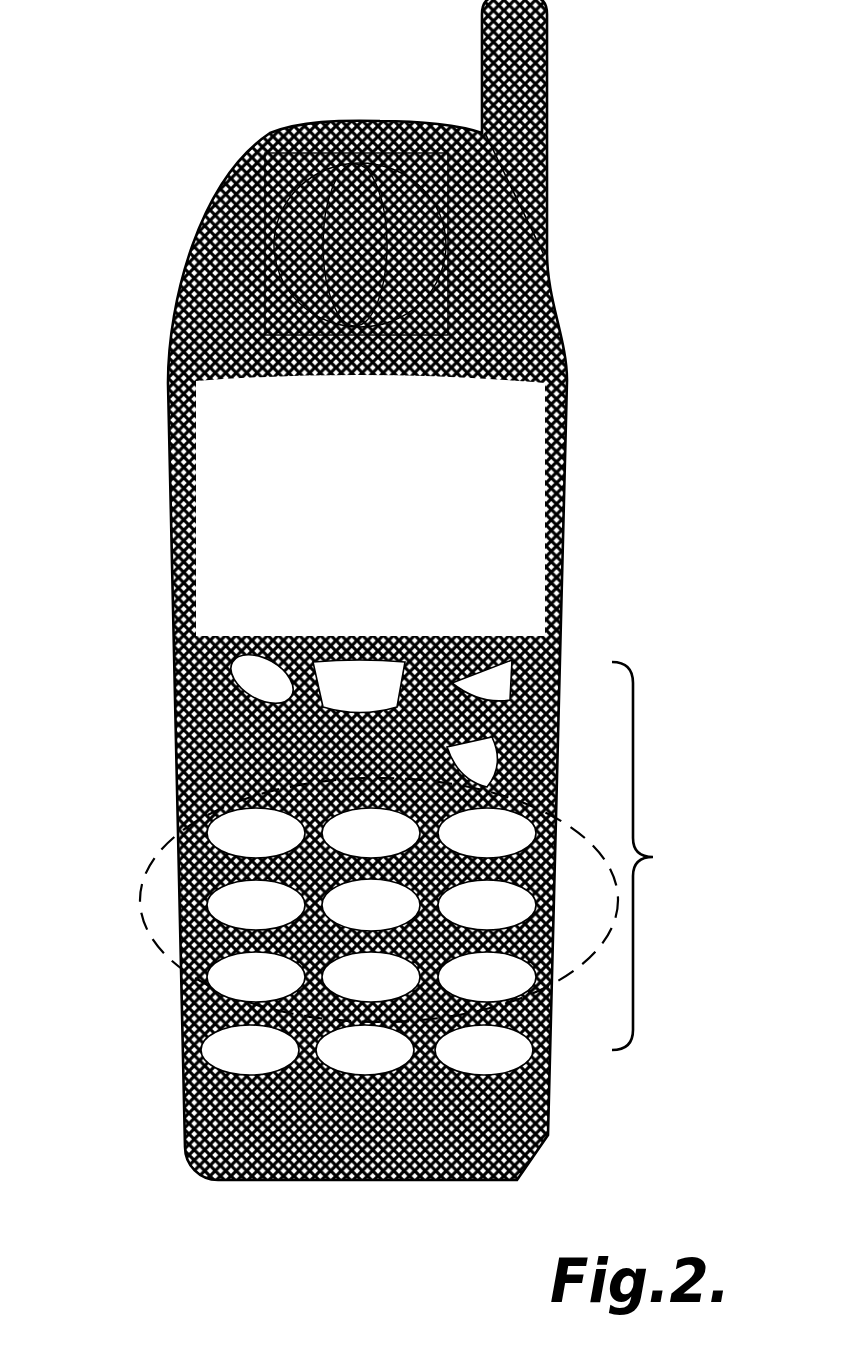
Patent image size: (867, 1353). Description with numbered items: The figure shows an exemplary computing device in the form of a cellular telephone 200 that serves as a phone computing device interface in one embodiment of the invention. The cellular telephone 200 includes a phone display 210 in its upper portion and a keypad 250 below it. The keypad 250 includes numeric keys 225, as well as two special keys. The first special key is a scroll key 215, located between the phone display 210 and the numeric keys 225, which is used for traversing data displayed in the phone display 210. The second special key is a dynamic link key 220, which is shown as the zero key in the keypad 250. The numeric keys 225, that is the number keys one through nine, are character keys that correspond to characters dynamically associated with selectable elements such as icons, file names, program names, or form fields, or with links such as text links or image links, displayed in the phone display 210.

The cellular telephone 200 is at (567, 585).
The phone display 210 is at (493, 478).
The scroll key 215 is at (357, 683).
The dynamic link key 220 is at (363, 1063).
The numeric keys 225 is at (140, 887).
The keypad 250 is at (664, 856).